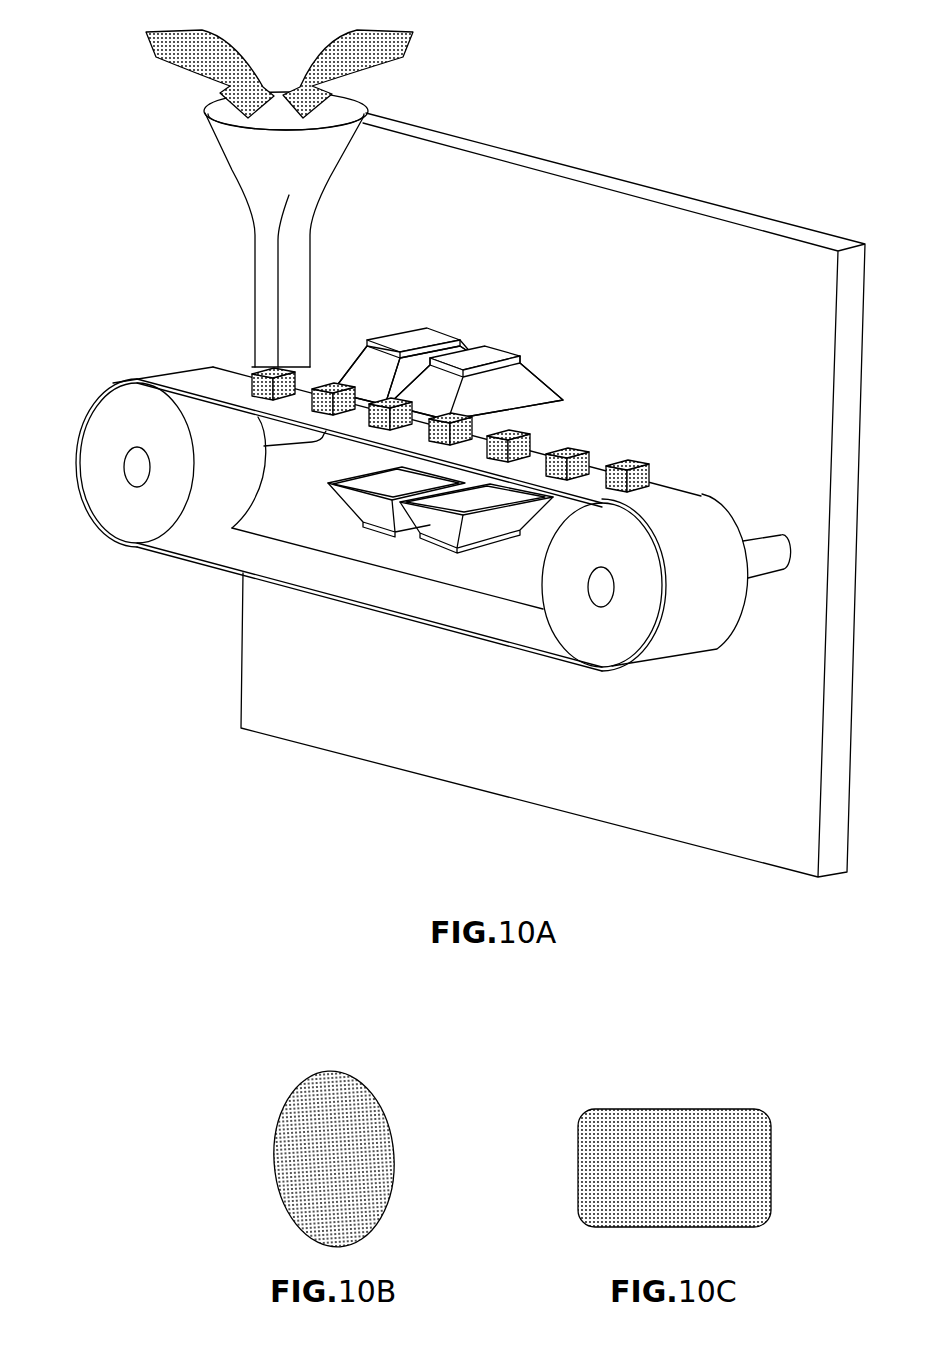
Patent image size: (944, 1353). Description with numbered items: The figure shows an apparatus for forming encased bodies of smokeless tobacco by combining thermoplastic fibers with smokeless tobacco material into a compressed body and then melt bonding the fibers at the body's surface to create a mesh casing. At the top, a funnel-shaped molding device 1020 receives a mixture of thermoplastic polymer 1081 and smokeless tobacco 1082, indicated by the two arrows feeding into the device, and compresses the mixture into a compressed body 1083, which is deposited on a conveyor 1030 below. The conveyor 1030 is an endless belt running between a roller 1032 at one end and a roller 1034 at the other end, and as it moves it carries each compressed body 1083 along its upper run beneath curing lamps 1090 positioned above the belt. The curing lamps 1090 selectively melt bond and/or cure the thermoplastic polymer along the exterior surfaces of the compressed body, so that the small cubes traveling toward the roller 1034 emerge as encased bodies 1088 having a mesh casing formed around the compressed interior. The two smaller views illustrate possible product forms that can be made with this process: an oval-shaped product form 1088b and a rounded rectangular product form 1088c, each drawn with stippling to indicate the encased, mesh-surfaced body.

In FIG. 10A, the molding device 1020 is at (263, 178).
In FIG. 10A, the conveyor 1030 is at (208, 386).
In FIG. 10A, the roller 1032 is at (137, 465).
In FIG. 10A, the roller 1034 is at (601, 587).
In FIG. 10A, the thermoplastic polymer 1081 is at (146, 36).
In FIG. 10A, the smokeless tobacco 1082 is at (413, 36).
In FIG. 10A, the compressed body 1083 is at (322, 396).
In FIG. 10A, the encased body 1088 is at (533, 445).
In FIG. 10A, the curing lamps 1090 is at (413, 338).
In FIG. 10B, the product form 1088b is at (273, 1158).
In FIG. 10C, the product form 1088c is at (771, 1160).